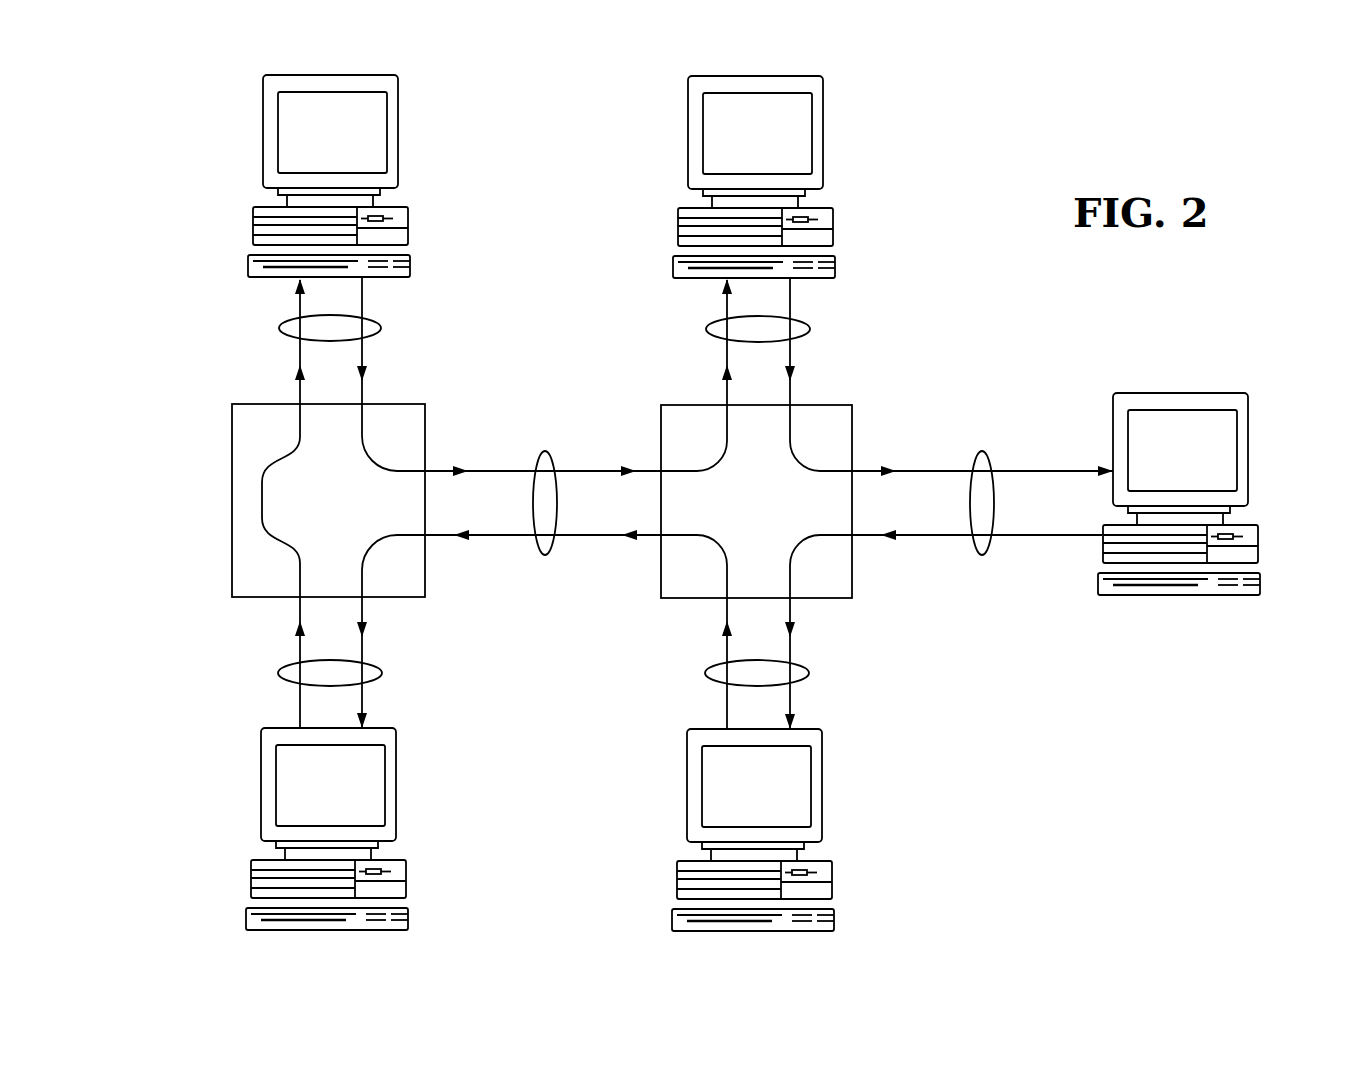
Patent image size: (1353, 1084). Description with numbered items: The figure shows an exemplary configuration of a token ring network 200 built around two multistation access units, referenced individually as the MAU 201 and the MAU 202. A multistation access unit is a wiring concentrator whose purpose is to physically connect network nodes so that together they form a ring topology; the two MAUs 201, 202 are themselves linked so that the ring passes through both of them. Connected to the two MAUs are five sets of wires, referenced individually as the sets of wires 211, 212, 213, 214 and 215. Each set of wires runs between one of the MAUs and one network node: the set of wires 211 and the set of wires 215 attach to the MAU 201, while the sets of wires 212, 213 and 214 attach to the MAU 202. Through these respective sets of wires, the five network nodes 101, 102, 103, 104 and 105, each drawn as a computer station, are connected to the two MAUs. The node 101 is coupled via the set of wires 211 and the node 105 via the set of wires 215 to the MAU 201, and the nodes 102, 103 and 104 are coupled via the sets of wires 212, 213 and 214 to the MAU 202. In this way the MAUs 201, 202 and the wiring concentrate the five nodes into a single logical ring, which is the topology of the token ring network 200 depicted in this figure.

The network node 101 is at (263, 119).
The network node 102 is at (825, 122).
The network node 103 is at (1250, 447).
The network node 104 is at (823, 777).
The network node 105 is at (261, 773).
The token ring network 200 is at (1103, 764).
The multistation access unit 201 is at (232, 476).
The multistation access unit 202 is at (853, 410).
The set of wires 211 is at (280, 327).
The set of wires 212 is at (811, 328).
The set of wires 213 is at (982, 554).
The set of wires 214 is at (810, 671).
The set of wires 215 is at (278, 670).